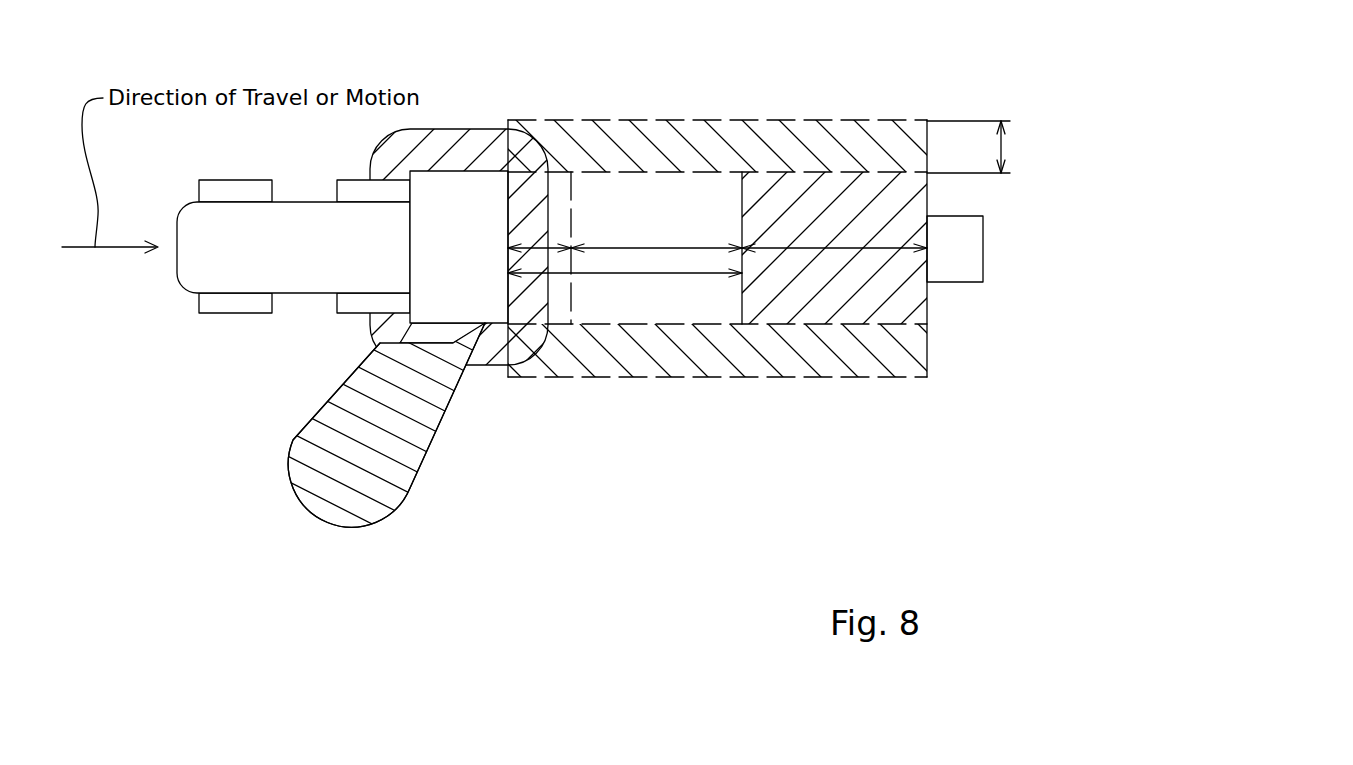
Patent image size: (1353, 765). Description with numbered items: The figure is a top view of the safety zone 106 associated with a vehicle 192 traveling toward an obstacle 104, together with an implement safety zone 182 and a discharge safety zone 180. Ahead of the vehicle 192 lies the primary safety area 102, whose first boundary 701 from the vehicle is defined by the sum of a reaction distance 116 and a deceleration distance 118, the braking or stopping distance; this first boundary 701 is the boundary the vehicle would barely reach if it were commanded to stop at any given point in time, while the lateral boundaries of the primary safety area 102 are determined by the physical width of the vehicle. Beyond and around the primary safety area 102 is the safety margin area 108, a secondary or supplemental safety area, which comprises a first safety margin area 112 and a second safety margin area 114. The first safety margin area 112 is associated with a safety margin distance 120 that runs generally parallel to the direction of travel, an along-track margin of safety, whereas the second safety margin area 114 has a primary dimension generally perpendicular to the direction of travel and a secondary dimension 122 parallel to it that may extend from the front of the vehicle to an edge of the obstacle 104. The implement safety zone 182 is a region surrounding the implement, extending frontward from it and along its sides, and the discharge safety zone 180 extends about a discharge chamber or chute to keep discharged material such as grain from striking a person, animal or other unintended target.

The implement safety zone 182 is at (477, 138).
The vehicle 192 is at (298, 275).
The discharge safety zone 180 is at (328, 498).
The second safety margin area 114 is at (897, 128).
The first safety margin area 112 is at (915, 292).
The safety margin area 108 is at (832, 400).
The primary safety area 102 is at (637, 300).
The safety zone 106 is at (743, 438).
The obstacle 104 is at (975, 250).
The width of second safety margin area 122 is at (1005, 148).
The reaction distance 116 is at (535, 245).
The deceleration distance 118 is at (656, 246).
The safety margin distance 120 is at (790, 230).
The first boundary 701 is at (650, 274).